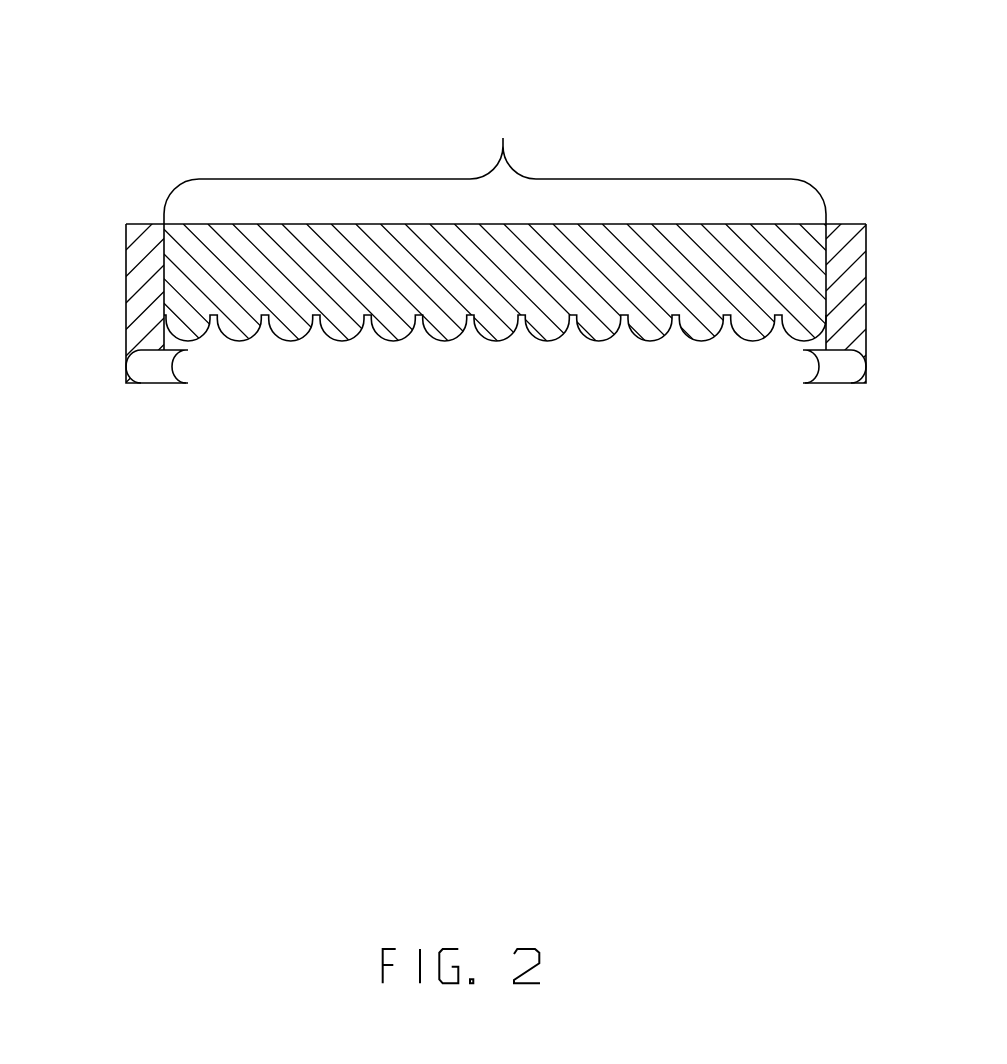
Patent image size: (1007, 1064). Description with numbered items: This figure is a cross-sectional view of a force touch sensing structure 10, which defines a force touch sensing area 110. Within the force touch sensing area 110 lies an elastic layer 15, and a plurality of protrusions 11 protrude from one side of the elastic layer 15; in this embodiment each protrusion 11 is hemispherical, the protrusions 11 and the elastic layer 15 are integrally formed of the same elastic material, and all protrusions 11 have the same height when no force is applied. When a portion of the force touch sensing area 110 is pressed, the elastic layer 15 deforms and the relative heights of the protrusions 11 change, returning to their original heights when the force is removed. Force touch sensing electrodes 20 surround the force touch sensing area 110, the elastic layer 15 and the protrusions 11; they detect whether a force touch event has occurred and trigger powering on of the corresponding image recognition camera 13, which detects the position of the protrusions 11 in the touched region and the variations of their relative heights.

The force touch sensing structure 10 is at (570, 72).
The force touch sensing area 110 is at (495, 167).
The protrusion 11 is at (496, 320).
The image recognition camera 13 is at (152, 373).
The elastic layer 15 is at (452, 283).
The force touch sensing electrode 20 is at (143, 273).